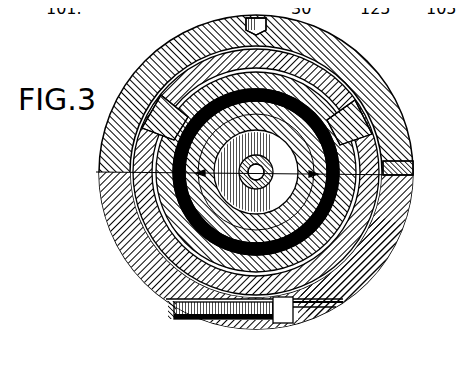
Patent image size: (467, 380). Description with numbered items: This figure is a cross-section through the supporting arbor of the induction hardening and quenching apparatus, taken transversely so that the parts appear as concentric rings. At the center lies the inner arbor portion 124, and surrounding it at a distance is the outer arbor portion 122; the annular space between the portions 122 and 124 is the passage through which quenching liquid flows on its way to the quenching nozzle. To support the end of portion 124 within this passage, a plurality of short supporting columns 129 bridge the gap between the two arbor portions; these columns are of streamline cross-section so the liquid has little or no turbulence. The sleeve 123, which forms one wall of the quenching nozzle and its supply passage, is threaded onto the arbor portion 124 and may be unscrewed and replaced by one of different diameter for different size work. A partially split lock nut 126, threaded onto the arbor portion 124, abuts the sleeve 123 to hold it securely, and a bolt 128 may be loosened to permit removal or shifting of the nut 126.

The arbor portion 122 is at (414, 208).
The sleeve 123 is at (92, 164).
The arbor portion 124 is at (330, 86).
The partially split lock nut 126 is at (375, 249).
The bolt 128 is at (285, 312).
The short supporting columns 129 is at (380, 107).